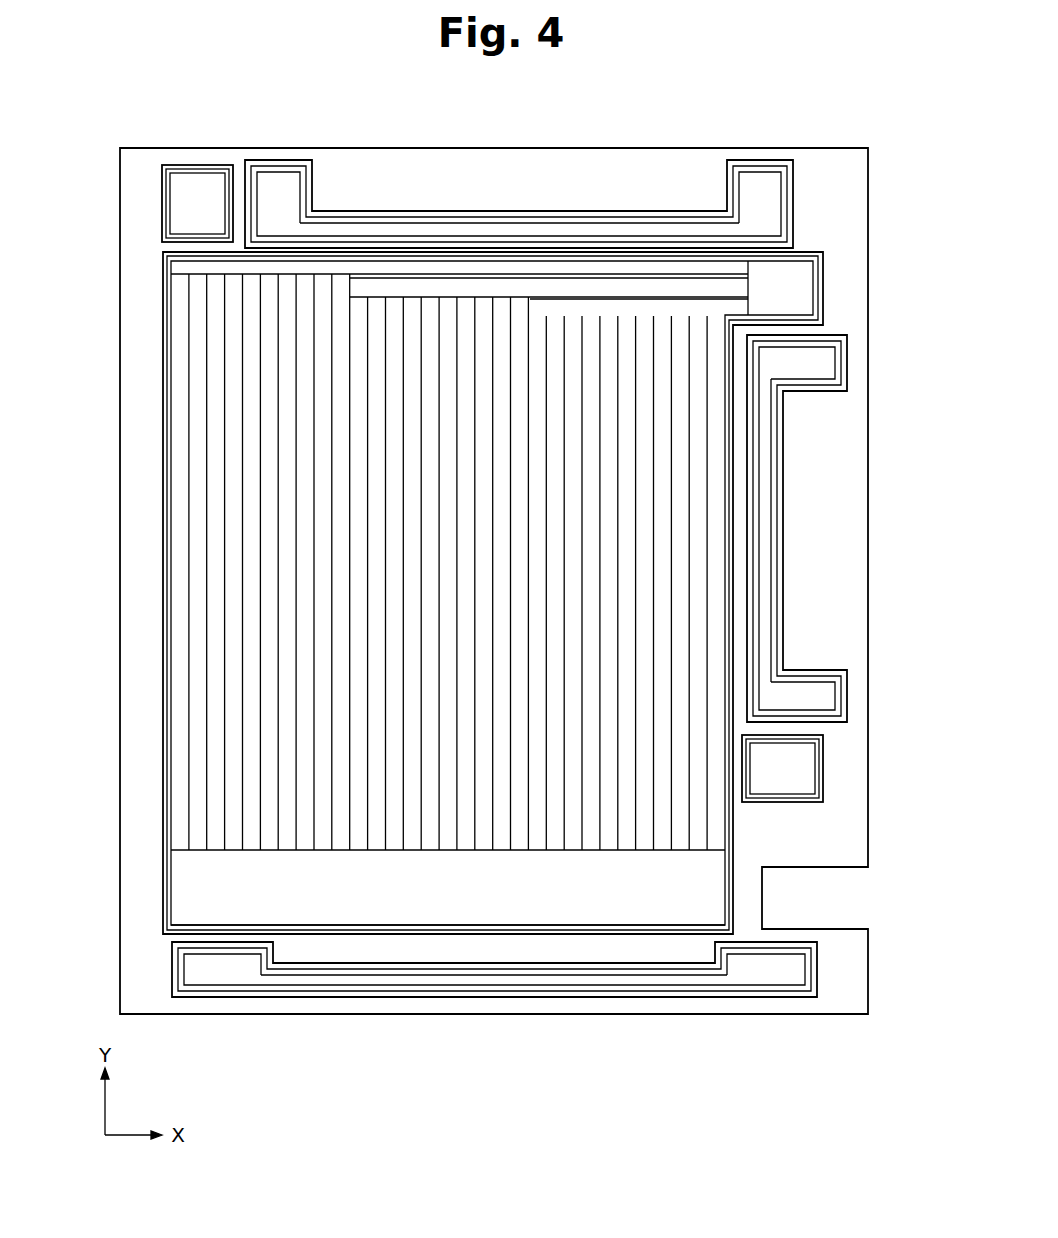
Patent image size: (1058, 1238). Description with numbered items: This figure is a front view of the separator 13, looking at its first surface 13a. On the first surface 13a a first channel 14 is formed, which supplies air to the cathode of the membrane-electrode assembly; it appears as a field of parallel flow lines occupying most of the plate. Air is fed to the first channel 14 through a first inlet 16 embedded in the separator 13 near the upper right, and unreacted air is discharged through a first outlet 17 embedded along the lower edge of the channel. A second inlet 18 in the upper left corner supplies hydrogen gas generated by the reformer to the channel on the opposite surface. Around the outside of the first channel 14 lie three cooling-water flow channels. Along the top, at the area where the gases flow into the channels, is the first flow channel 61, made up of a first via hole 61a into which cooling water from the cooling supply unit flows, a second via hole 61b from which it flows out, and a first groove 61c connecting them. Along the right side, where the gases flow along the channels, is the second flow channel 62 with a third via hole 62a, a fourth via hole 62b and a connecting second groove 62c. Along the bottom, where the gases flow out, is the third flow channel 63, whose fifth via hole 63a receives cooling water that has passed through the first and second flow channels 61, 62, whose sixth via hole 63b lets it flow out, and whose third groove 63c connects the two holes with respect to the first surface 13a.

The separator 13 is at (862, 128).
The first surface 13a is at (538, 157).
The first channel 14 is at (496, 593).
The first inlet 16 is at (805, 288).
The first outlet 17 is at (182, 890).
The second inlet 18 is at (195, 187).
The first flow channel 61 is at (519, 178).
The first via hole 61a is at (760, 187).
The second via hole 61b is at (278, 190).
The first groove 61c is at (410, 232).
The second flow channel 62 is at (835, 528).
The third via hole 62a is at (830, 370).
The fourth via hole 62b is at (830, 690).
The second groove 62c is at (765, 428).
The third flow channel 63 is at (494, 1004).
The fifth via hole 63a is at (755, 978).
The sixth via hole 63b is at (233, 978).
The third groove 63c is at (570, 982).